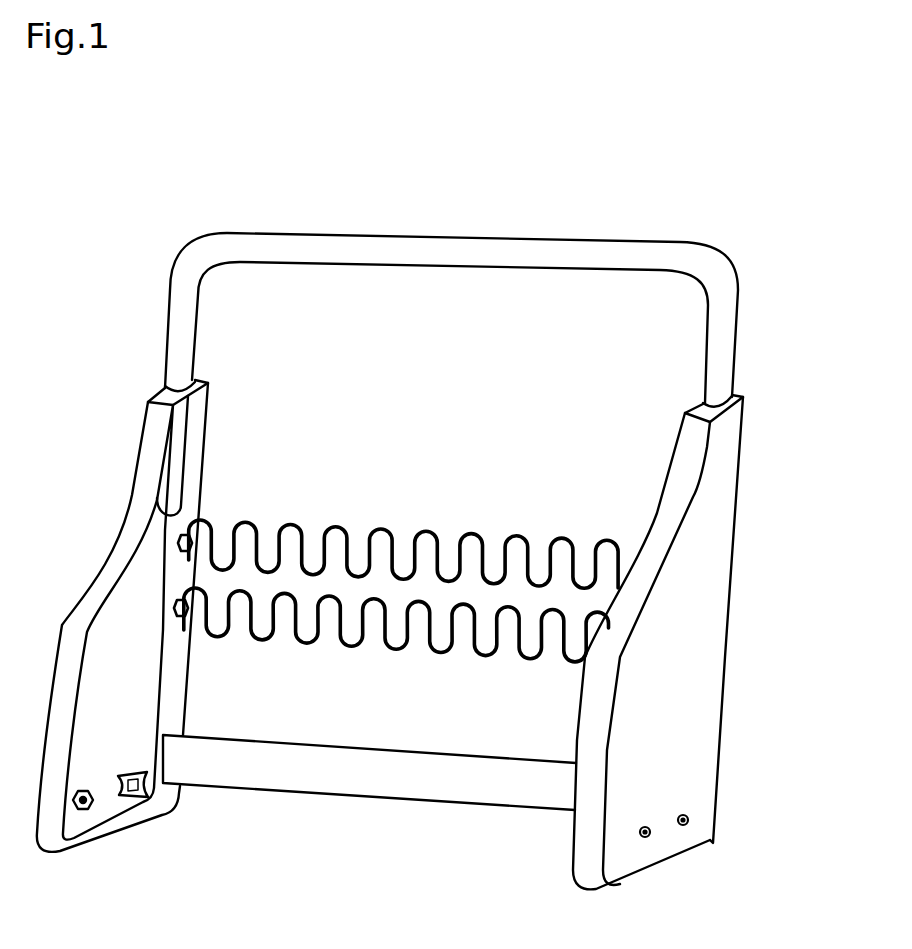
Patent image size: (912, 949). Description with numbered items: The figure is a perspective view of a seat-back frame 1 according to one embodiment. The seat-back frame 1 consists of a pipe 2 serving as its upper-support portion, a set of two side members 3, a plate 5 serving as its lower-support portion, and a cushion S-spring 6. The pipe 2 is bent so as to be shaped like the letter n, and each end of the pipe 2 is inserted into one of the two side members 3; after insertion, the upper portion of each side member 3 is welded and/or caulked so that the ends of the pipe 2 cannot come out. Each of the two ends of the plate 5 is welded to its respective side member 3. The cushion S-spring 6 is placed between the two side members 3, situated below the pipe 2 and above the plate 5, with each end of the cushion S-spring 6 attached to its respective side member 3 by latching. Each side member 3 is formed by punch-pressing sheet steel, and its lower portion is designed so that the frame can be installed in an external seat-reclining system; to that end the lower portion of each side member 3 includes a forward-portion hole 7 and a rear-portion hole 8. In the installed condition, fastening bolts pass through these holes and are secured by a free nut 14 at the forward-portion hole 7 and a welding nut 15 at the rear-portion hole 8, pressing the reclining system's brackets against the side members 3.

The seat-back frame 1 is at (718, 180).
The pipe 2 is at (356, 234).
The side member 3 is at (128, 506).
The plate 5 is at (445, 788).
The cushion S-spring 6 is at (385, 522).
The forward-portion hole 7 is at (647, 838).
The rear-portion hole 8 is at (690, 821).
The free nut 14 is at (92, 808).
The welding nut 15 is at (143, 793).